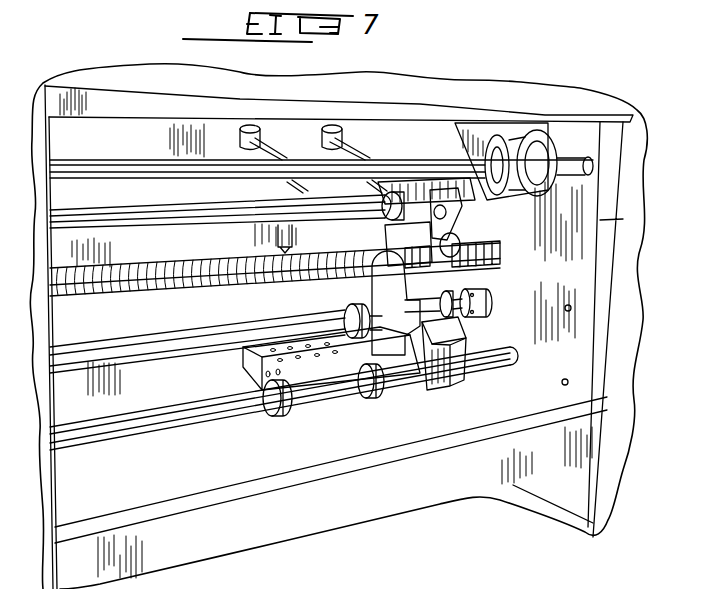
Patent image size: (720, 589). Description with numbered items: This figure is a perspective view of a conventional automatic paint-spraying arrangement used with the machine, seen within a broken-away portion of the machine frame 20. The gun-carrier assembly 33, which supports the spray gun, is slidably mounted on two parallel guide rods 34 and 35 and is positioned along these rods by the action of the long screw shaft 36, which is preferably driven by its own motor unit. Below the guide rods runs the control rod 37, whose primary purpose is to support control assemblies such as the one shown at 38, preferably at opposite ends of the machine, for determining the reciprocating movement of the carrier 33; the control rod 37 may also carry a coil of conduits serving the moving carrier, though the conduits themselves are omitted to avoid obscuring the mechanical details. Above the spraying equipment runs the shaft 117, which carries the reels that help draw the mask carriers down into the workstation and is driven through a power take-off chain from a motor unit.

The cabinet frame 20 is at (625, 257).
The shaft 117 is at (95, 167).
The guide rod 34 is at (182, 213).
The long screw shaft 36 is at (192, 292).
The guide rod 35 is at (127, 343).
The gun-carrier assembly 33 is at (373, 290).
The control rod 37 is at (141, 422).
The control assembly 38 is at (440, 386).